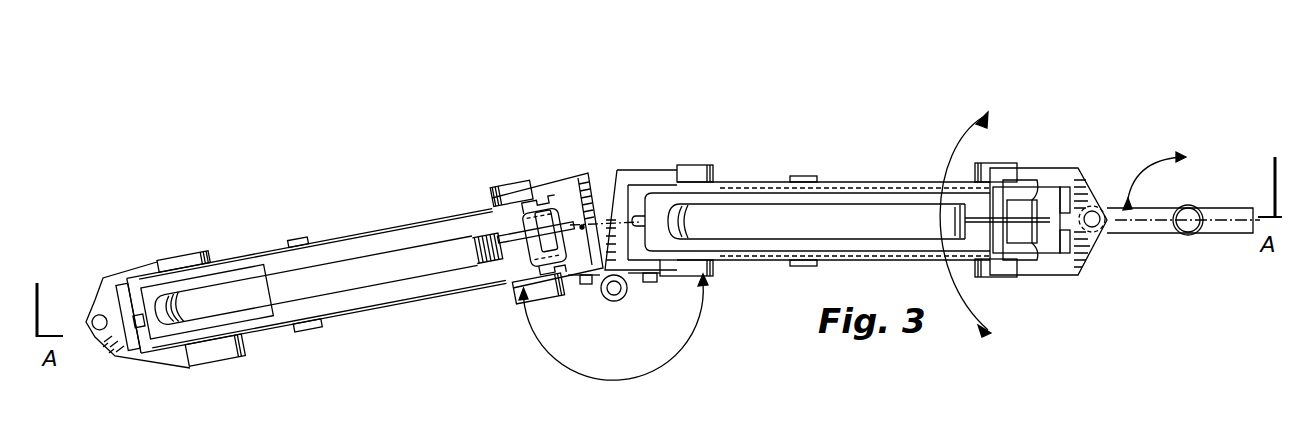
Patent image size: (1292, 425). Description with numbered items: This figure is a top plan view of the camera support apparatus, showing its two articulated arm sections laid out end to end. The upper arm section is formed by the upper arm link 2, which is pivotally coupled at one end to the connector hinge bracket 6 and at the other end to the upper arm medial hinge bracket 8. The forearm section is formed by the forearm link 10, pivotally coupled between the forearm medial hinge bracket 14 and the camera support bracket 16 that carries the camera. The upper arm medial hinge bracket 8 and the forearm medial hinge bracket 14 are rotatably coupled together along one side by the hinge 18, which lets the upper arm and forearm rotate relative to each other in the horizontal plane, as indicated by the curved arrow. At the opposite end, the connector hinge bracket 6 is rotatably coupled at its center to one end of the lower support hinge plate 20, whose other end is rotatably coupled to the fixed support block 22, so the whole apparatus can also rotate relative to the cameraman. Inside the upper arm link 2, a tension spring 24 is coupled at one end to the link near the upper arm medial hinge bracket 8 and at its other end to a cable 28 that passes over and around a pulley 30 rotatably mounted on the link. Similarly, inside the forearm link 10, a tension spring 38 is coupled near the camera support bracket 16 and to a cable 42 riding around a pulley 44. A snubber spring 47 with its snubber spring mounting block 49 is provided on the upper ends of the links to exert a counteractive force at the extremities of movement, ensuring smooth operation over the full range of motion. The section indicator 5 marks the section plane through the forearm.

The upper arm link 2 is at (847, 195).
The section line 5- 5 is at (122, 322).
The connector hinge bracket 6 is at (1093, 247).
The upper arm medial hinge bracket 8 is at (660, 266).
The forearm link 10 is at (287, 248).
The forearm medial hinge bracket 14 is at (570, 282).
The camera support bracket 16 is at (134, 273).
The hinge 18 is at (614, 302).
The lower support hinge plate 20 is at (1160, 231).
The fixed support block 22 is at (1227, 208).
The tension spring 24 is at (887, 212).
The cable 28 is at (982, 217).
The pulley 30 is at (1030, 210).
The tension spring 38 is at (355, 265).
The cable 42 is at (501, 237).
The pulley 44 is at (547, 217).
The snubber spring 47 is at (218, 258).
The snubber spring mounting block 49 is at (283, 238).